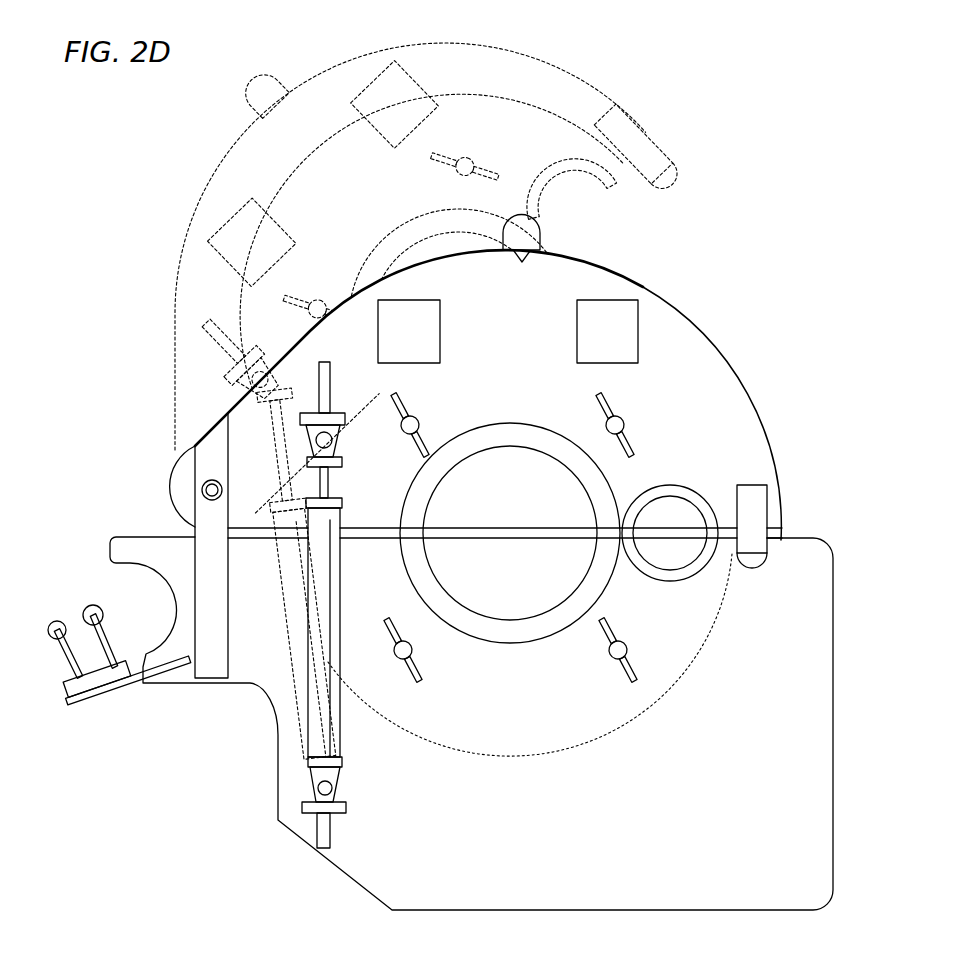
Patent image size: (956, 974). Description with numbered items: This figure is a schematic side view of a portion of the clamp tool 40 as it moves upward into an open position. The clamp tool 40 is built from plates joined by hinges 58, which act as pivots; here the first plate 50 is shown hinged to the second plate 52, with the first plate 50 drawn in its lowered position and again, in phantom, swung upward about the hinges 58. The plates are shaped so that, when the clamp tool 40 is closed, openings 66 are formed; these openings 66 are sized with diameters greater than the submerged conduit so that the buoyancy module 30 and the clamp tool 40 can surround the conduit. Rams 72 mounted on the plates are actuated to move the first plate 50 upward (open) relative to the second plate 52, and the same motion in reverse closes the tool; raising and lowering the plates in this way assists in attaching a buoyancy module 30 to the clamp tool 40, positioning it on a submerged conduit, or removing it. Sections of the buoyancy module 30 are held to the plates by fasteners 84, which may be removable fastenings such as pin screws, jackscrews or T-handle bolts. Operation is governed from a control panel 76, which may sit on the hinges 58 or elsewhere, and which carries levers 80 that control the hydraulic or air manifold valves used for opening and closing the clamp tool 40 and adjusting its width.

The buoyancy module 30 is at (575, 736).
The clamp tool 40 is at (686, 105).
The first plate 50 is at (537, 58).
The second plate 52 is at (751, 875).
The hinges 58 is at (210, 662).
The openings 66 is at (505, 599).
The rams 72 is at (307, 729).
The control panel 76 is at (100, 694).
The levers 80 is at (56, 621).
The fasteners 84 is at (421, 424).